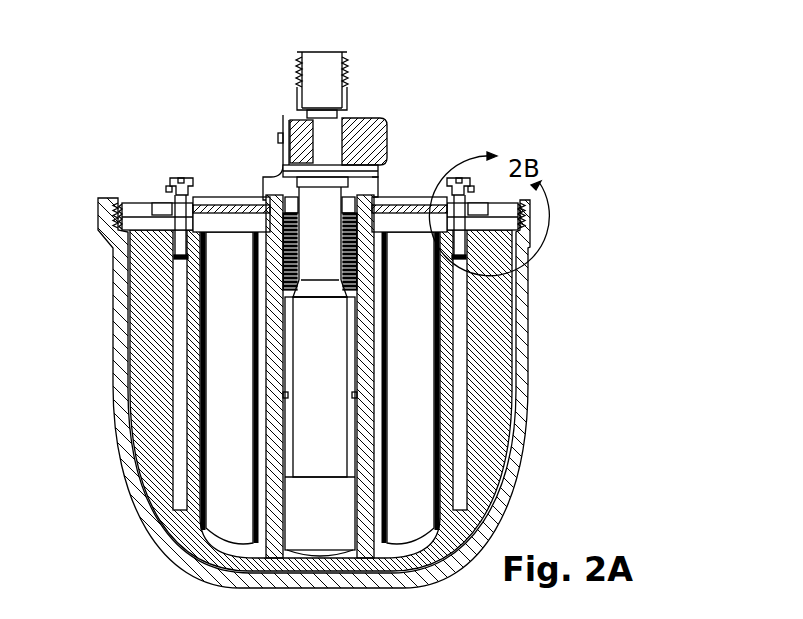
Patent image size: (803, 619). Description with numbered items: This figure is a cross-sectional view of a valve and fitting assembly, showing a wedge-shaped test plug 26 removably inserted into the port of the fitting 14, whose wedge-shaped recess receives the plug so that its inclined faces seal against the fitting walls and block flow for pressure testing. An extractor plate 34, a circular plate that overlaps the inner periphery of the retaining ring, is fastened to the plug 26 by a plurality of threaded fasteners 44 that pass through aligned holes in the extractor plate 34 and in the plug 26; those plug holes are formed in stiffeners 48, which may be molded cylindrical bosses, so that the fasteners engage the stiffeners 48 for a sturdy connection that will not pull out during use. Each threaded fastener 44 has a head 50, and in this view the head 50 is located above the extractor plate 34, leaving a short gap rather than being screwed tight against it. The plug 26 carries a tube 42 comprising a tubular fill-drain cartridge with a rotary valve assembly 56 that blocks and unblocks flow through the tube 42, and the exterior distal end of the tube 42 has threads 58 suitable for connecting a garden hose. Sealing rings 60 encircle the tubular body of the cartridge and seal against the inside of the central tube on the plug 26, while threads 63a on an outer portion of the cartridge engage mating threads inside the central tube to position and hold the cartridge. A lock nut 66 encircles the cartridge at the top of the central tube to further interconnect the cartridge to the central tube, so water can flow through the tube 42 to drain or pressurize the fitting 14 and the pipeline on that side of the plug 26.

The fitting 14 is at (528, 383).
The plug 26 is at (152, 248).
The extractor plate 34 is at (388, 192).
The tube 42 is at (348, 48).
The threaded fastener 44 is at (170, 189).
The stiffener 48 is at (172, 300).
The head 50 is at (182, 178).
The rotary valve assembly 56 is at (288, 117).
The threads 58 is at (349, 80).
The sealing rings 60 is at (285, 396).
The threads 63a is at (284, 292).
The lock nut 66 is at (286, 193).